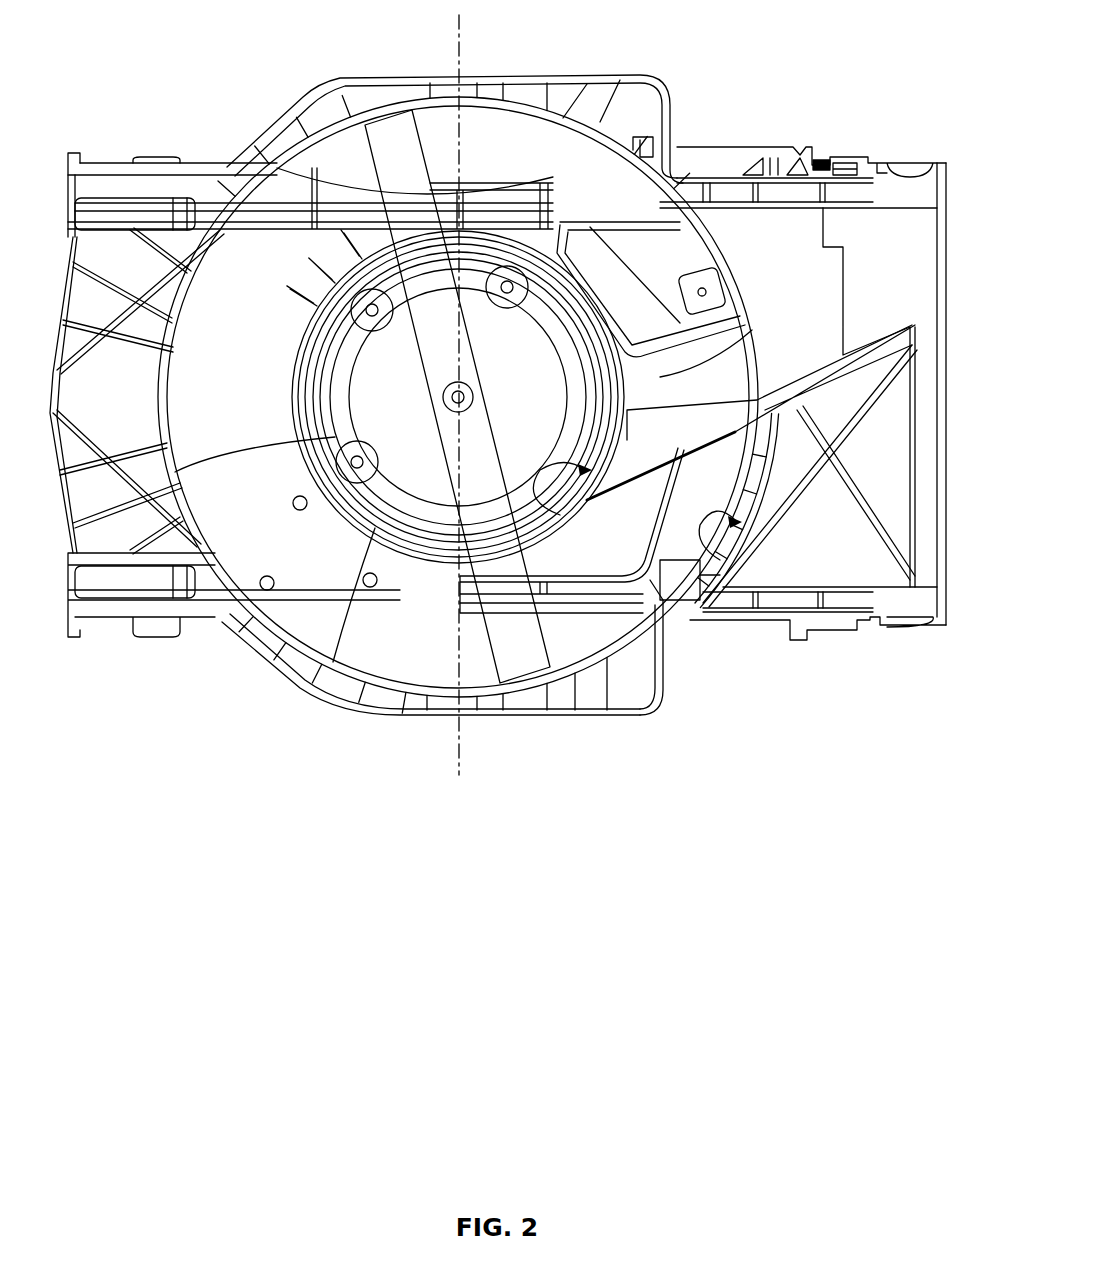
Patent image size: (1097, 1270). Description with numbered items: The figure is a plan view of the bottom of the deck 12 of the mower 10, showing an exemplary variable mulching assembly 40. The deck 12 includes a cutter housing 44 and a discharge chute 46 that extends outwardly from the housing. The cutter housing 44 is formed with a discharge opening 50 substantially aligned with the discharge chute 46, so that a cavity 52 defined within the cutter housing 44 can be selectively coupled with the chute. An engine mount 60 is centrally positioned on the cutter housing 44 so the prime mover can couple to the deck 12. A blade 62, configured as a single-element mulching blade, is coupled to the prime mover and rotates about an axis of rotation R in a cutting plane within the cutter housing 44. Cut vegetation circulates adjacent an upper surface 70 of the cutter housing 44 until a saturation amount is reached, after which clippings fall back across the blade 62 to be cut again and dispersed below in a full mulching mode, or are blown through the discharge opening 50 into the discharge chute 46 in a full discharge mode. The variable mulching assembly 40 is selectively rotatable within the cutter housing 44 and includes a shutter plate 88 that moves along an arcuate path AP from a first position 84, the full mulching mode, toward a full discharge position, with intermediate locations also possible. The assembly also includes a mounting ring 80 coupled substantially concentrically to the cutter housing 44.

The mower 10 is at (880, 76).
The deck 12 is at (210, 105).
The variable mulching assembly 40 is at (547, 395).
The cutter housing 44 is at (198, 403).
The discharge chute 46 is at (830, 552).
The discharge opening 50 is at (690, 640).
The cavity 52 is at (227, 290).
The engine mount 60 is at (580, 398).
The blade 62 is at (405, 150).
The upper surface 70 is at (260, 427).
The mounting ring 80 is at (310, 678).
The first position 84 is at (667, 703).
The shutter plate 88 is at (680, 257).
The arcuate path AP is at (652, 415).
The axis of rotation R is at (458, 375).